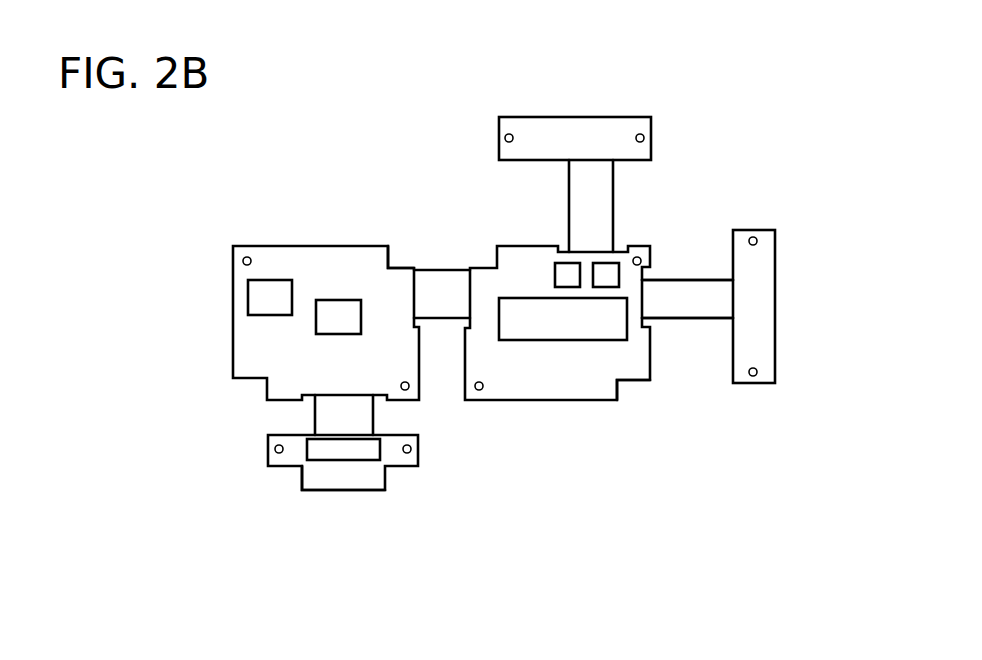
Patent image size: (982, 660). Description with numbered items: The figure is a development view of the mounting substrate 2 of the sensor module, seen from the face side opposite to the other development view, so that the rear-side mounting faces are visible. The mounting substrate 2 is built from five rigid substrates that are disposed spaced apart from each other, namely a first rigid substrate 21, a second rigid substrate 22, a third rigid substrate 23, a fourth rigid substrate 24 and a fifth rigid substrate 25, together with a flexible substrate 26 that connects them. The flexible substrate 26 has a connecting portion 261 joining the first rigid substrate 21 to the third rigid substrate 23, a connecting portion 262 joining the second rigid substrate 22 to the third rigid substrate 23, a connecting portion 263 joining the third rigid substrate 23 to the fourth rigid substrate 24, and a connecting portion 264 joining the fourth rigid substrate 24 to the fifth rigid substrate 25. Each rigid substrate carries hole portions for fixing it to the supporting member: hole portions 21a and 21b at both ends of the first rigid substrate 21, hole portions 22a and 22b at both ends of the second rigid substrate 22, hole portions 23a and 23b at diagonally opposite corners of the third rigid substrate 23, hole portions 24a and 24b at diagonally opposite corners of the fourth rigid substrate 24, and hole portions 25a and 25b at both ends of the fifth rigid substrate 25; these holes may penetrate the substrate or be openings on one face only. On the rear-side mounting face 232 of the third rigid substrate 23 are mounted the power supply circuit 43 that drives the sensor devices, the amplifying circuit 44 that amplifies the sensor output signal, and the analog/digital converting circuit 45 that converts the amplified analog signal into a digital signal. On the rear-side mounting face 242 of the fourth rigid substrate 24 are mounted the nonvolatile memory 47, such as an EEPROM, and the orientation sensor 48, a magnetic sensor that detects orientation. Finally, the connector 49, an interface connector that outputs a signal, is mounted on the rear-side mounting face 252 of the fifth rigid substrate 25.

The mounting substrate 2 is at (754, 112).
The first rigid substrate 21 is at (556, 113).
The hole portion 21a is at (645, 138).
The hole portion 21b is at (505, 138).
The second rigid substrate 22 is at (780, 280).
The hole portion 22a is at (754, 378).
The hole portion 22b is at (756, 238).
The third rigid substrate 23 is at (543, 402).
The hole portion 23a is at (480, 390).
The hole portion 23b is at (640, 258).
The rear-side mounting face 232 is at (603, 377).
The fourth rigid substrate 24 is at (302, 244).
The hole portion 24a is at (407, 390).
The hole portion 24b is at (242, 261).
The rear-side mounting face 242 is at (396, 282).
The fifth rigid substrate 25 is at (312, 492).
The hole portion 25a is at (408, 454).
The hole portion 25b is at (274, 449).
The rear-side mounting face 252 is at (312, 478).
The flexible substrate 26 is at (697, 280).
The connecting portion 261 is at (580, 188).
The connecting portion 262 is at (692, 305).
The connecting portion 263 is at (443, 287).
The connecting portion 264 is at (327, 418).
The power supply circuit 43 is at (605, 272).
The amplifying circuit 44 is at (570, 275).
The analog/digital converting circuit 45 is at (584, 327).
The nonvolatile memory 47 is at (256, 298).
The orientation sensor 48 is at (334, 307).
The connector 49 is at (352, 452).